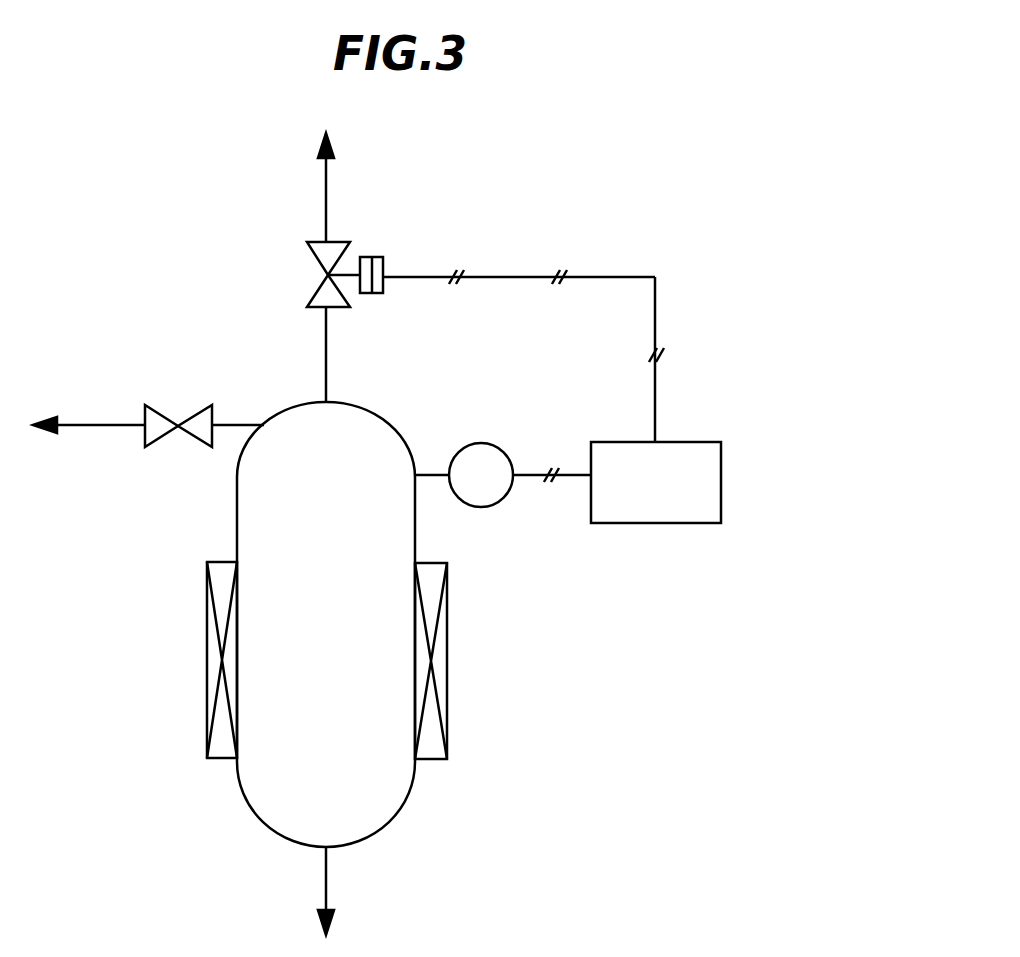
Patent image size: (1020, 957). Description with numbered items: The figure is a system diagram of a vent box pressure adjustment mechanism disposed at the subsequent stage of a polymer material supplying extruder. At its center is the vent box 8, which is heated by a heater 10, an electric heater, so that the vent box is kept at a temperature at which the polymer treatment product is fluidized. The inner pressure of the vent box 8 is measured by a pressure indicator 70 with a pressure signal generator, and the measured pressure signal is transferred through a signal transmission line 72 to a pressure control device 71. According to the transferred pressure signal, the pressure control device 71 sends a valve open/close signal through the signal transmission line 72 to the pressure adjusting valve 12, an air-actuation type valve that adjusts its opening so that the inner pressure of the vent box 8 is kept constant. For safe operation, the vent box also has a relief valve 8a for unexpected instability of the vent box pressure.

The vent box 8 is at (237, 540).
The relief valve 8a is at (148, 417).
The heater 10 is at (437, 677).
The pressure adjusting valve 12 is at (313, 295).
The pressure indicator 70 is at (493, 507).
The pressure control device 71 is at (658, 523).
The signal transmission line 72 is at (655, 322).